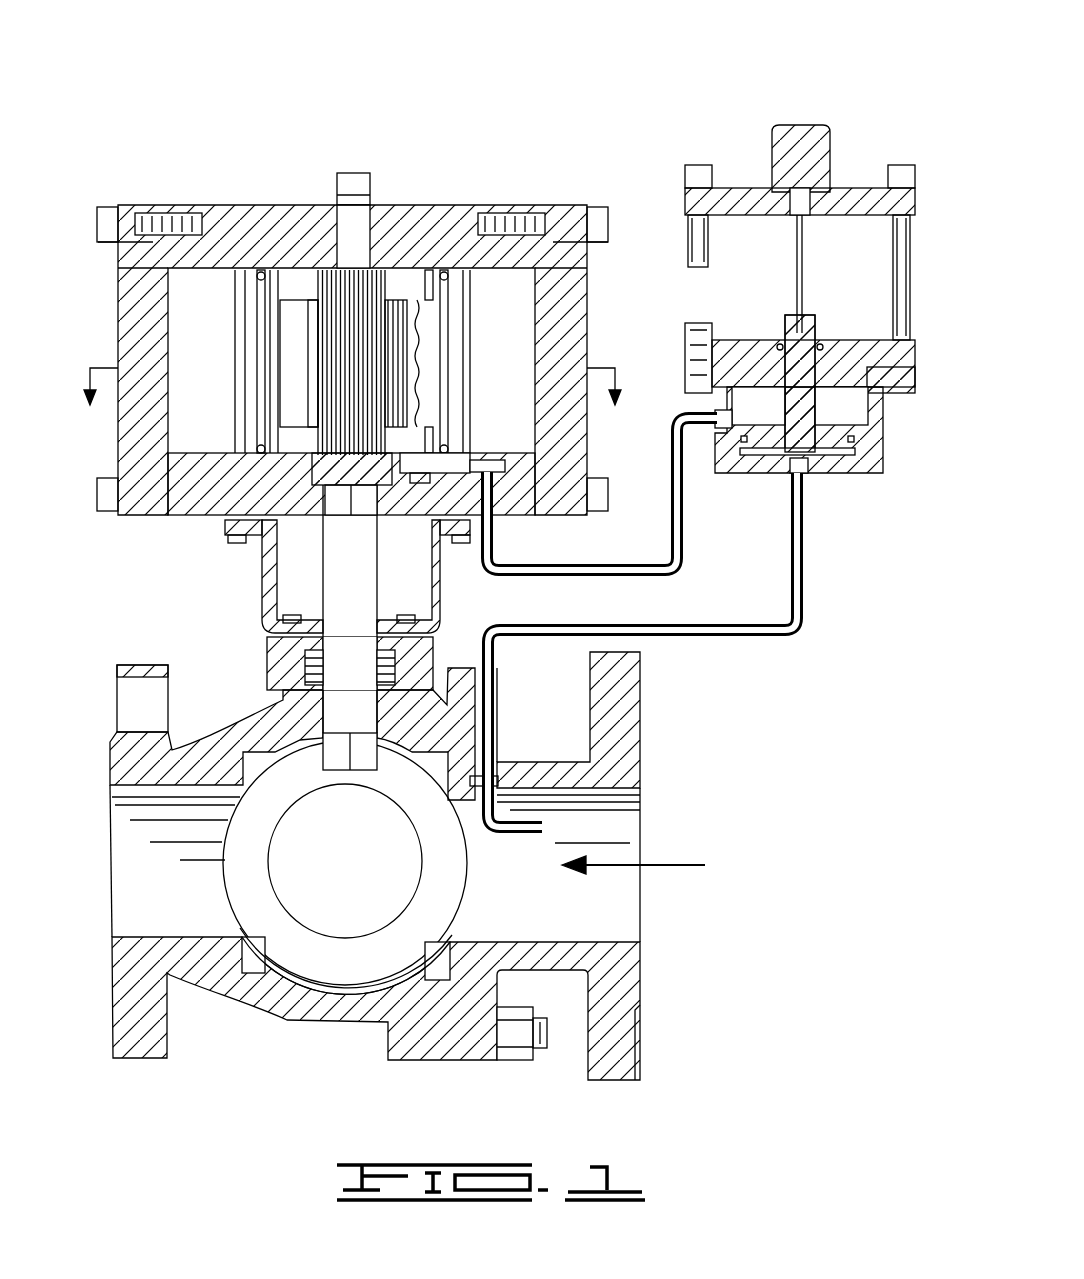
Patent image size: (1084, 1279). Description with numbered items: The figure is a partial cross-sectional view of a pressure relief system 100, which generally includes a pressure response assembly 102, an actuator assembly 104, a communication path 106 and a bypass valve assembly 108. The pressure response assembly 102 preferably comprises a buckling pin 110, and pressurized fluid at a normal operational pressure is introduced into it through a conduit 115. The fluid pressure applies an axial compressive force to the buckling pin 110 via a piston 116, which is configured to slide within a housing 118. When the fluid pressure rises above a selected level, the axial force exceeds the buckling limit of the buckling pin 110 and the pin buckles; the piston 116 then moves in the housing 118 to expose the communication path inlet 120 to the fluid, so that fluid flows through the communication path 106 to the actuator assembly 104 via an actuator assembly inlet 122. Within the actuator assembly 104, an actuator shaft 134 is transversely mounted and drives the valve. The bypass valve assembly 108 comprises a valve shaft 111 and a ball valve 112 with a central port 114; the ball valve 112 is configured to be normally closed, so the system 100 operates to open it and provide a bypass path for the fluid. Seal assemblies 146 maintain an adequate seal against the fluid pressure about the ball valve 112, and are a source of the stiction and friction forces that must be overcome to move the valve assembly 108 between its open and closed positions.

The system 100 is at (668, 70).
The pressure response assembly 102 is at (805, 116).
The actuator assembly 104 is at (372, 160).
The communication path 106 is at (570, 576).
The bypass valve assembly 108 is at (654, 700).
The buckling pin 110 is at (800, 282).
The valve shaft 111 is at (338, 580).
The ball valve 112 is at (233, 877).
The central port 114 is at (300, 882).
The conduit 115 is at (792, 645).
The piston 116 is at (845, 445).
The housing 118 is at (875, 455).
The communication path inlet 120 is at (715, 425).
The actuator assembly inlet 122 is at (500, 473).
The actuator shaft 134 is at (310, 470).
The seal assemblies 146 is at (252, 958).